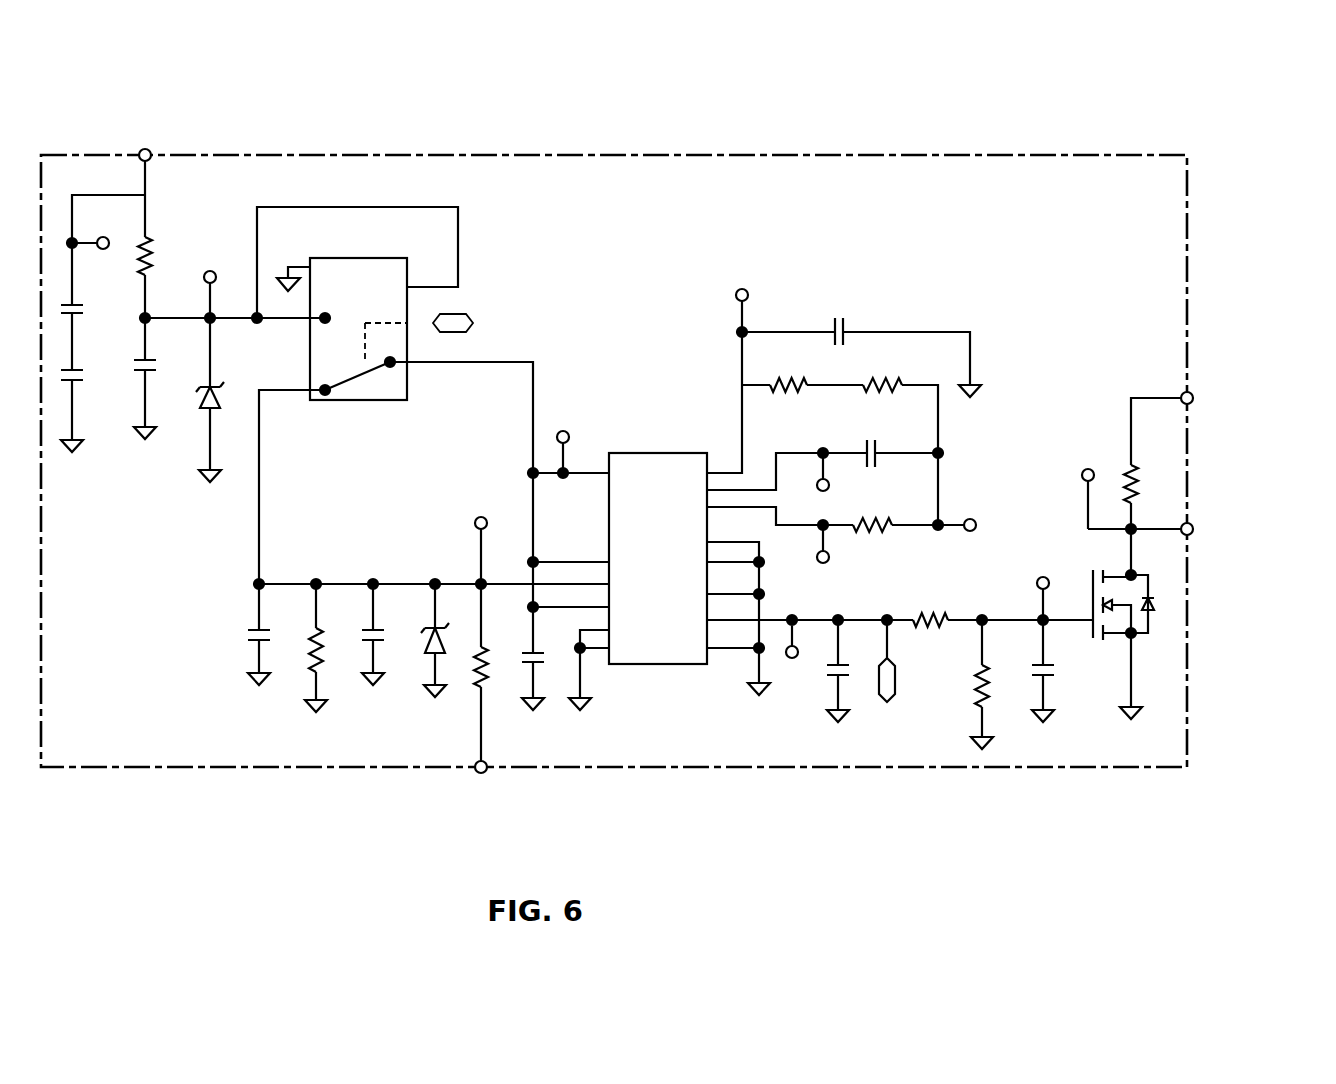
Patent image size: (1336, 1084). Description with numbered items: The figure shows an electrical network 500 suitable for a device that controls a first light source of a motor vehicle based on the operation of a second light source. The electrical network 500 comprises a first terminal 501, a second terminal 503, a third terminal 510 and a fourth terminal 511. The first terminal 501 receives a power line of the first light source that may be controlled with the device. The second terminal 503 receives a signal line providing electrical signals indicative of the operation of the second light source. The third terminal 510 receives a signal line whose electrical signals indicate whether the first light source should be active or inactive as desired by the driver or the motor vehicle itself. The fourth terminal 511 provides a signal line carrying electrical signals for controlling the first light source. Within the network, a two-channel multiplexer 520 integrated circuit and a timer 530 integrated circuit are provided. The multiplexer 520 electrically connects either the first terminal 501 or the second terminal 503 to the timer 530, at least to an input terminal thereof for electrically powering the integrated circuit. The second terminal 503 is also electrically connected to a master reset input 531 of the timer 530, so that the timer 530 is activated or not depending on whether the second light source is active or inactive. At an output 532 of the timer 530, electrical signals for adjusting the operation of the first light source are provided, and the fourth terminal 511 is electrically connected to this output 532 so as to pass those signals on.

The electrical network 500 is at (1003, 150).
The first terminal 501 is at (140, 148).
The second terminal 503 is at (472, 778).
The third terminal 510 is at (1195, 392).
The fourth terminal 511 is at (1195, 525).
The 2-channel multiplexer 520 is at (382, 278).
The timer 530 is at (645, 647).
The master reset input 531 is at (592, 588).
The output 532 is at (713, 628).